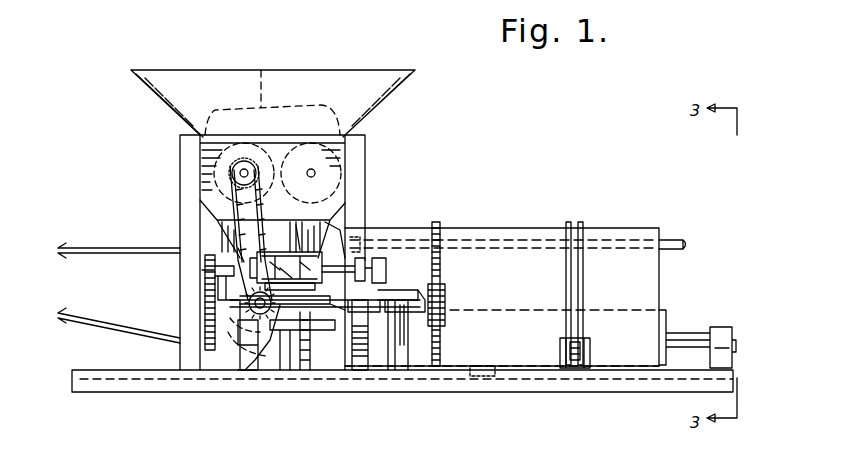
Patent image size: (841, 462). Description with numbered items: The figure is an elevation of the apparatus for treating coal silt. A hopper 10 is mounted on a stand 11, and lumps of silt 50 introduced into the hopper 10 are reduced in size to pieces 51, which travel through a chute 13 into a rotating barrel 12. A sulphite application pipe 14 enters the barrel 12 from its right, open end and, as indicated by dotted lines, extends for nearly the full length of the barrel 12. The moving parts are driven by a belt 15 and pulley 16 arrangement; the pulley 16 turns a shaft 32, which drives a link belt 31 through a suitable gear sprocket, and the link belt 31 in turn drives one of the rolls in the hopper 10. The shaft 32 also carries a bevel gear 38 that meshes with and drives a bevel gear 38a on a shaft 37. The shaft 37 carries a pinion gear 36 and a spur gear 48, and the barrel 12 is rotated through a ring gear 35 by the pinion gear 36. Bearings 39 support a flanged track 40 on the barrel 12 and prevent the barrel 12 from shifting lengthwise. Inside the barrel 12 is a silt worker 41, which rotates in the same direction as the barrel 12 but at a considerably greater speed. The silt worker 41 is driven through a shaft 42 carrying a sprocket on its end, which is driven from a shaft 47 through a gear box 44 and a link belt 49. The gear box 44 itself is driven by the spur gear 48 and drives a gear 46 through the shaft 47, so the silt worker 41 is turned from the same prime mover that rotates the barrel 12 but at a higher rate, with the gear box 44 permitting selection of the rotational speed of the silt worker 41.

The hopper 10 is at (364, 80).
The stand 11 is at (363, 173).
The rotating barrel 12 is at (496, 228).
The chute 13 is at (300, 224).
The sulphite application pipe 14 is at (674, 240).
The belt 15 is at (92, 255).
The pulley 16 is at (272, 345).
The link belt 31 is at (205, 198).
The shaft 32 is at (245, 370).
The ring gear 35 is at (440, 222).
The pinion gear 36 is at (445, 300).
The shaft 37 is at (400, 299).
The bevel gear 38 is at (273, 316).
The bevel gear 38a is at (300, 255).
The bearings 39 is at (582, 344).
The flanged track 40 is at (584, 291).
The silt worker 41 is at (668, 328).
The shaft 42 is at (288, 342).
The gear box 44 is at (340, 219).
The gear 46 is at (212, 268).
The shaft 47 is at (238, 252).
The spur gear 48 is at (358, 352).
The link belt 49 is at (213, 292).
The lumps of silt 50 is at (260, 67).
The pieces 51 is at (498, 386).